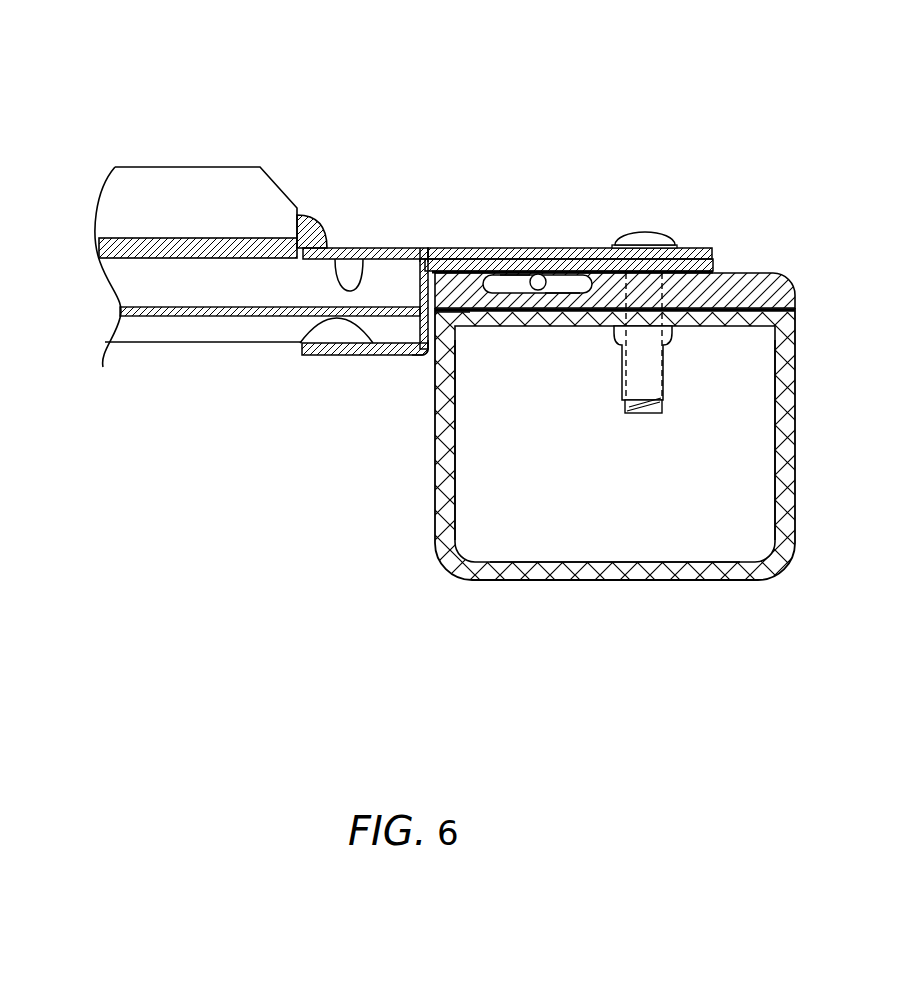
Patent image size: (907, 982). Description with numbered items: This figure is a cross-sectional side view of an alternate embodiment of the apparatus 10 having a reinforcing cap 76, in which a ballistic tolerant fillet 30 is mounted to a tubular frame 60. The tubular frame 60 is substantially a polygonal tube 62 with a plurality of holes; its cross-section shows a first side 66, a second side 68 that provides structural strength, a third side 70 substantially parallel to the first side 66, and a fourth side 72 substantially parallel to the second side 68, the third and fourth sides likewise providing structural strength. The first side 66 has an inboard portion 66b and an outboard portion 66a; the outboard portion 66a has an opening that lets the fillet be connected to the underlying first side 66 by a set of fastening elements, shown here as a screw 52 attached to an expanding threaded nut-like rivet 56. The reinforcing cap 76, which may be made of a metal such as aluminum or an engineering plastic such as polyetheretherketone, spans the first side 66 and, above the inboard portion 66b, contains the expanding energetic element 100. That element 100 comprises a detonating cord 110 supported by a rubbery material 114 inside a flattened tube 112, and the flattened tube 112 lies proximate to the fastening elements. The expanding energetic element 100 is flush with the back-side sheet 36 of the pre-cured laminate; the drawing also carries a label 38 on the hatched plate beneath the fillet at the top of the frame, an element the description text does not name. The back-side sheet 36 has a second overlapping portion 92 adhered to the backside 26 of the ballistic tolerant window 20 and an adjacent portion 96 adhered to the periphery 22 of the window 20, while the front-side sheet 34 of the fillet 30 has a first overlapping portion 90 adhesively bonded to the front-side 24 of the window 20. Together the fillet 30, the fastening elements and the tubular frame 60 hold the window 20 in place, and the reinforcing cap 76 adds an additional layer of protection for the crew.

The apparatus 10 is at (742, 100).
The ballistic tolerant window 20 is at (137, 380).
The periphery 22 is at (366, 288).
The front-side 24 is at (335, 259).
The backside 26 is at (301, 343).
The ballistic tolerant fillet 30 is at (569, 172).
The front-side sheet 34 is at (563, 253).
The back-side sheet 36 is at (627, 274).
The base plate 38 is at (615, 291).
The screw 52 is at (643, 236).
The expanding threaded nut-like rivet 56 is at (633, 358).
The tubular frame 60 is at (623, 472).
The polygonal tube 62 is at (627, 462).
The first side 66 is at (762, 318).
The outboard portion 66a is at (680, 305).
The inboard portion 66b is at (510, 313).
The second side 68 is at (788, 427).
The third side 70 is at (651, 587).
The fourth side 72 is at (443, 430).
The reinforcing cap 76 is at (408, 358).
The first overlapping portion 90 is at (397, 252).
The second overlapping portion 92 is at (340, 356).
The adjacent portion 96 is at (423, 257).
The expanding energetic element 100 is at (497, 276).
The detonating cord 110 is at (533, 276).
The flattened tube 112 is at (517, 272).
The rubbery material 114 is at (562, 287).